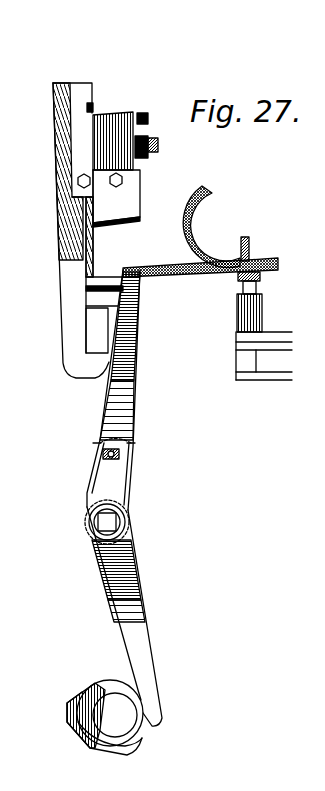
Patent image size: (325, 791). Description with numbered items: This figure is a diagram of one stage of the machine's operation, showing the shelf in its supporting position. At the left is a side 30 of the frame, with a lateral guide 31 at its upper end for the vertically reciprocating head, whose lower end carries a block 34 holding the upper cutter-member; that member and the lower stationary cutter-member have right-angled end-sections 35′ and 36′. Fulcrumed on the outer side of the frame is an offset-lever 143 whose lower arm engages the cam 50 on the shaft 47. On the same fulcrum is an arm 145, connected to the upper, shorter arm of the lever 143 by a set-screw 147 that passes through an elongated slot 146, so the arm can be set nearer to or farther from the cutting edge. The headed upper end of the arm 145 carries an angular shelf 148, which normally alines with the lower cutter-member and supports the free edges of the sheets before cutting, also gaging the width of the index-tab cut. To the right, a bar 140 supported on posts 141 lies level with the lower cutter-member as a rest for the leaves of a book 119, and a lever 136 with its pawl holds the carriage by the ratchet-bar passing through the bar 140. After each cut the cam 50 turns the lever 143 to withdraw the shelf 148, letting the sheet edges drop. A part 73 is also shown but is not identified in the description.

The frame side 30 is at (63, 258).
The lateral guide 31 is at (87, 143).
The block 34 is at (122, 113).
The end-section of upper cutter-member 35′ is at (122, 205).
The end-section of lower cutter-member 36′ is at (107, 277).
The stop member 73 is at (98, 340).
The angular shelf 148 is at (125, 270).
The book 119 is at (213, 257).
The lever 136 is at (250, 242).
The bar 140 is at (258, 277).
The post 141 is at (248, 320).
The arm 145 is at (117, 408).
The set-screw 147 is at (118, 457).
The elongated slot 146 is at (97, 445).
The offset-lever 143 is at (135, 632).
The shaft 47 is at (105, 705).
The cam 50 is at (88, 752).